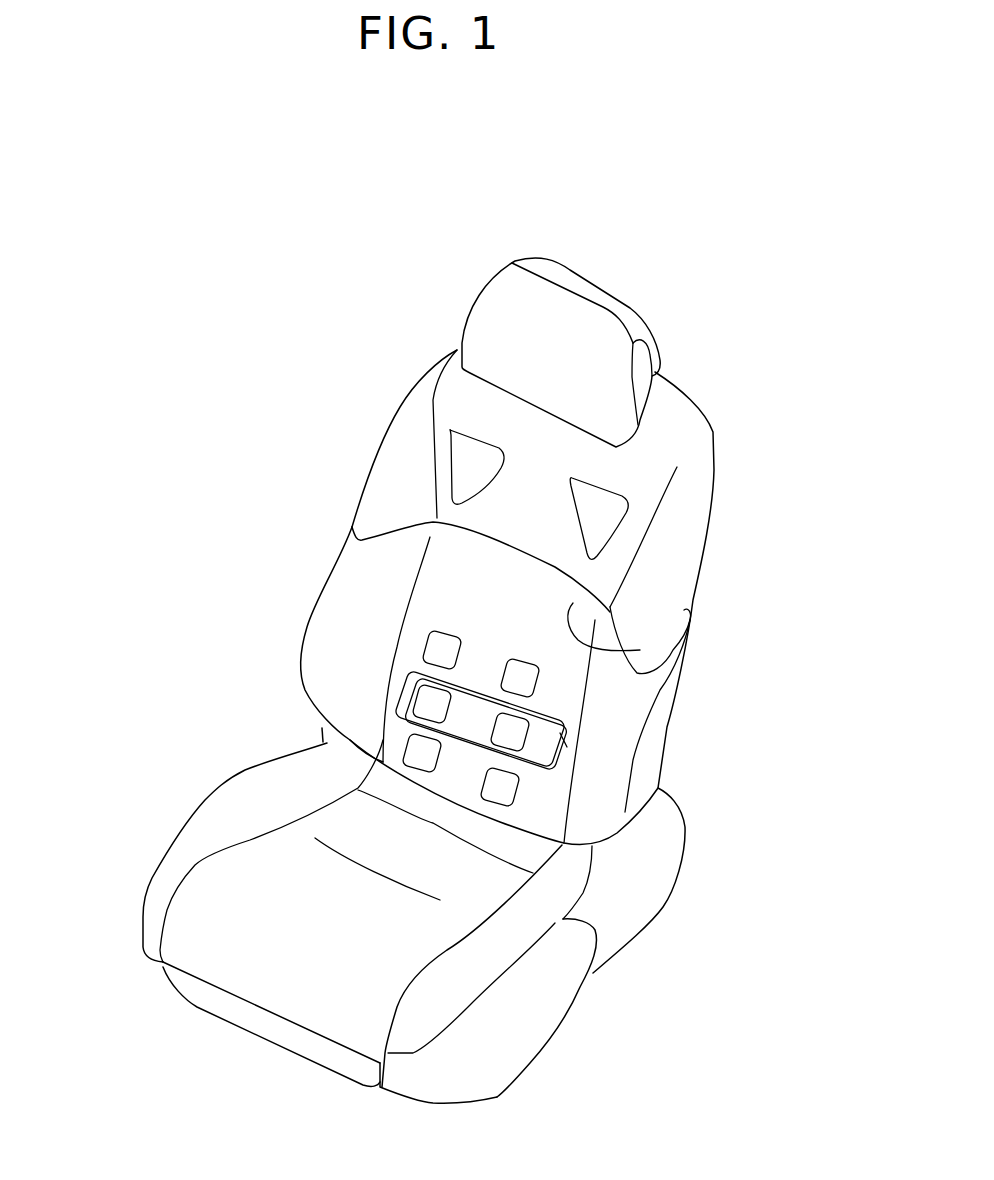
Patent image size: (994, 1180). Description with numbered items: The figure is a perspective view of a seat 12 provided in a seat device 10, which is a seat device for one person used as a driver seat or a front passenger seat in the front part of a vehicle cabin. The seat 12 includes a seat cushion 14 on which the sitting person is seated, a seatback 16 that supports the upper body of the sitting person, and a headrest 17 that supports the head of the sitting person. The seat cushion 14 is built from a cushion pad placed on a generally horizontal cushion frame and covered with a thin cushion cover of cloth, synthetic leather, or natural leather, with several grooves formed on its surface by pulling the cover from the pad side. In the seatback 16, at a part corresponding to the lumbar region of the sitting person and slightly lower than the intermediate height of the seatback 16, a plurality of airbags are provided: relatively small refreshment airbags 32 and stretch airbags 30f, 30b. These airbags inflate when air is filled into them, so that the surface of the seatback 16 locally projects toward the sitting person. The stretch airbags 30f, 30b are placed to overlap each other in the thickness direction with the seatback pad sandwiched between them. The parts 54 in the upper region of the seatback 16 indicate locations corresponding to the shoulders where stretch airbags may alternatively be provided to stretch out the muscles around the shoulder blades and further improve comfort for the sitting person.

The seat device 10 is at (422, 630).
The seat 12 is at (438, 226).
The seat cushion 14 is at (300, 922).
The seatback 16 is at (640, 650).
The headrest 17 is at (557, 300).
The stretch airbag 30b is at (567, 748).
The stretch airbag 30f is at (567, 755).
The refreshment airbag 32 is at (405, 740).
The parts corresponding to the shoulders 54 is at (450, 453).